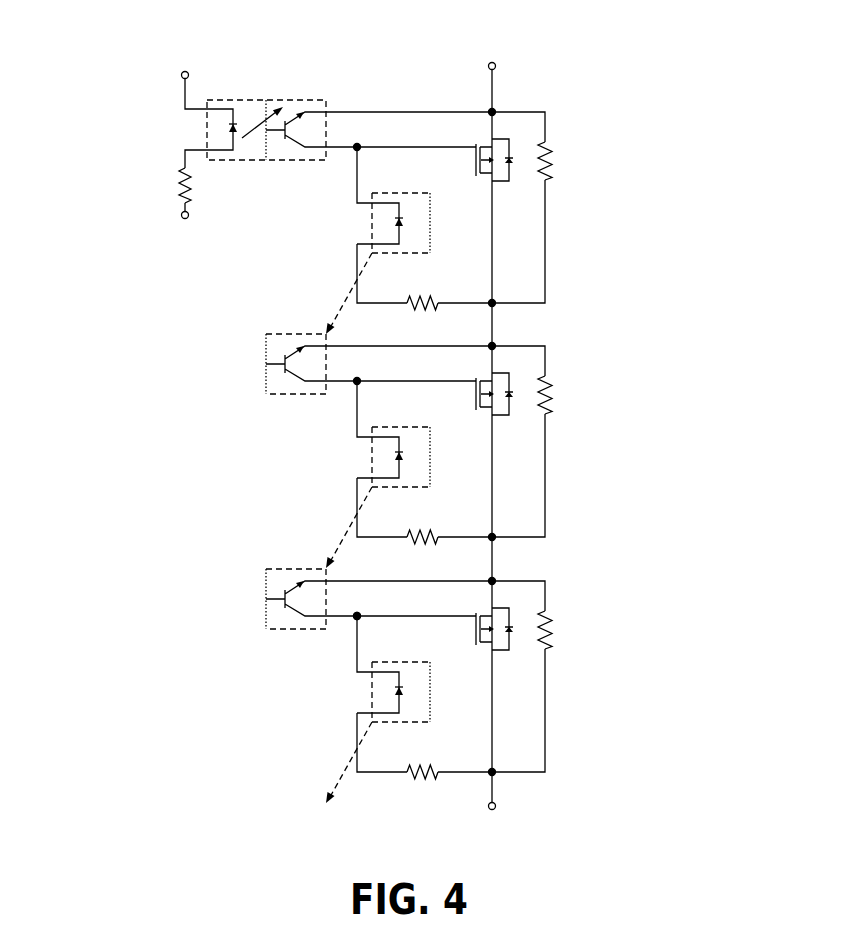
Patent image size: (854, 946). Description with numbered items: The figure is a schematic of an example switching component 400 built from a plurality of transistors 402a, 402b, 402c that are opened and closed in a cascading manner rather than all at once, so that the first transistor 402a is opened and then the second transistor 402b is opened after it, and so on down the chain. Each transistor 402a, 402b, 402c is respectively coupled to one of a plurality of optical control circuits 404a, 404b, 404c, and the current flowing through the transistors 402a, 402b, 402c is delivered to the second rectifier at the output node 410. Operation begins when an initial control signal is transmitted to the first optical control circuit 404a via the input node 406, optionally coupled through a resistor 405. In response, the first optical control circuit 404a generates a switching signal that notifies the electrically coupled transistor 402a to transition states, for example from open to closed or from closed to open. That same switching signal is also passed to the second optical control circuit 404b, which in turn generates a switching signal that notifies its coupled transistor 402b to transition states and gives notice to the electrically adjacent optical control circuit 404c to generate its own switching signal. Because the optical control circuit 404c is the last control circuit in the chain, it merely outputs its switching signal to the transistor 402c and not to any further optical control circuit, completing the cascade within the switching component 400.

The switching component 400 is at (117, 35).
The first transistor 402a is at (476, 166).
The second transistor 402b is at (476, 400).
The transistor 402c is at (477, 632).
The first optical control circuit 404a is at (266, 100).
The second optical control circuit 404b is at (372, 222).
The optical control circuit 404c is at (372, 453).
The resistor 405 is at (185, 168).
The input node 406 is at (182, 215).
The output node 410 is at (487, 66).